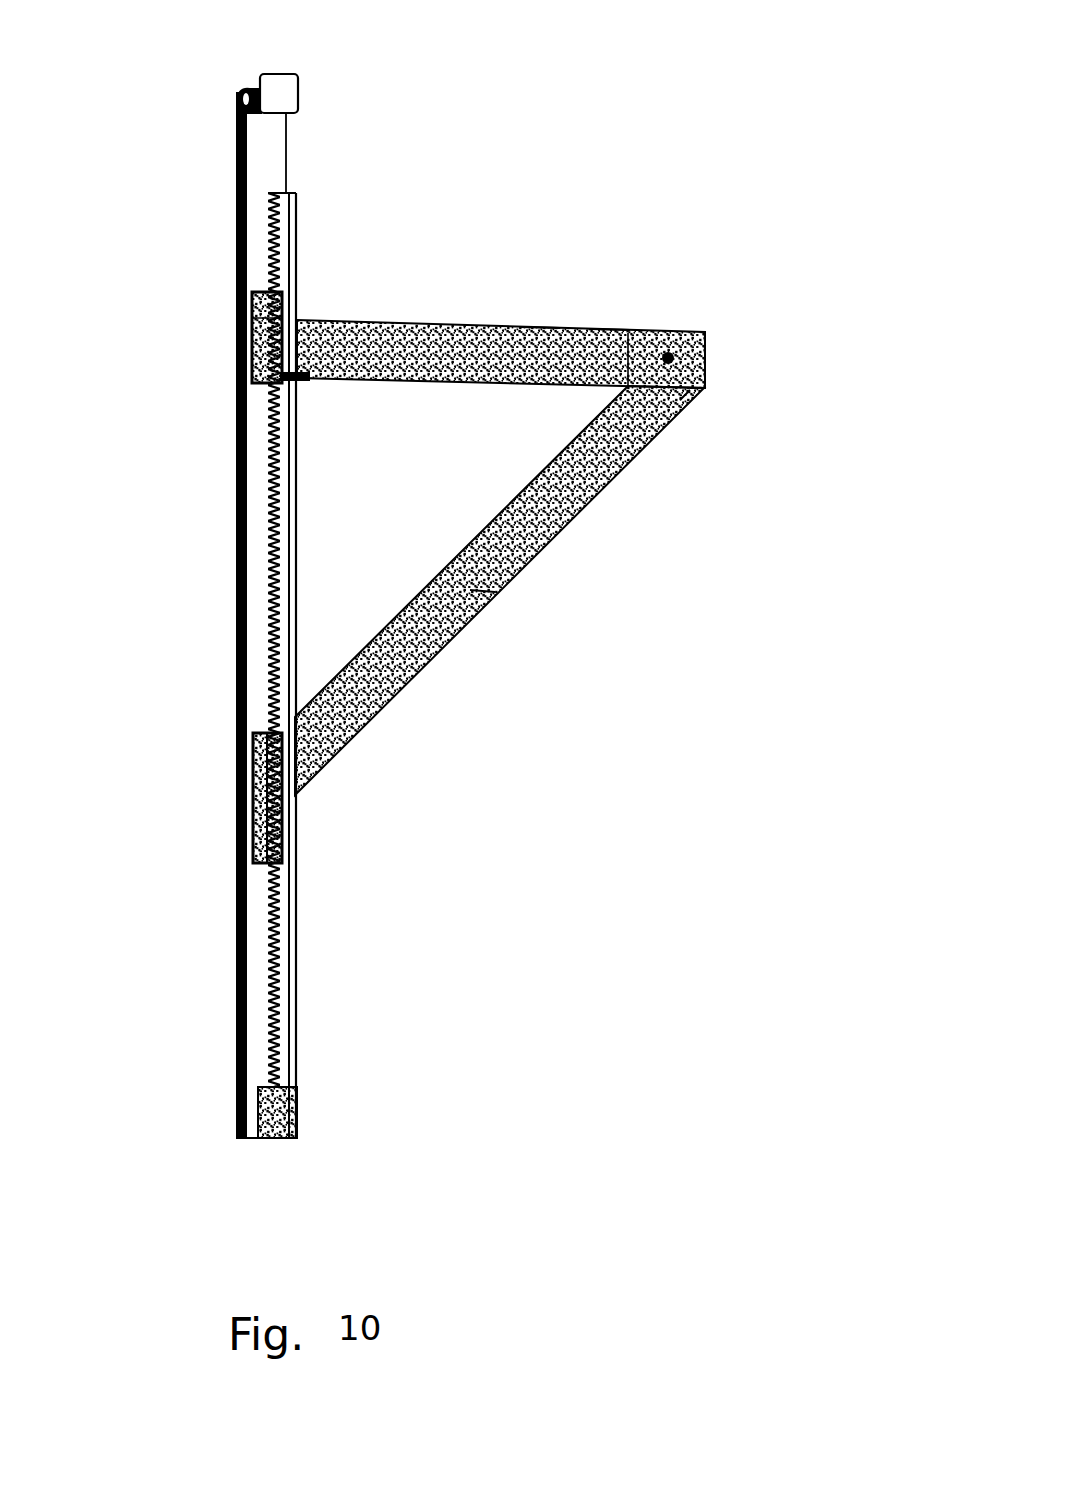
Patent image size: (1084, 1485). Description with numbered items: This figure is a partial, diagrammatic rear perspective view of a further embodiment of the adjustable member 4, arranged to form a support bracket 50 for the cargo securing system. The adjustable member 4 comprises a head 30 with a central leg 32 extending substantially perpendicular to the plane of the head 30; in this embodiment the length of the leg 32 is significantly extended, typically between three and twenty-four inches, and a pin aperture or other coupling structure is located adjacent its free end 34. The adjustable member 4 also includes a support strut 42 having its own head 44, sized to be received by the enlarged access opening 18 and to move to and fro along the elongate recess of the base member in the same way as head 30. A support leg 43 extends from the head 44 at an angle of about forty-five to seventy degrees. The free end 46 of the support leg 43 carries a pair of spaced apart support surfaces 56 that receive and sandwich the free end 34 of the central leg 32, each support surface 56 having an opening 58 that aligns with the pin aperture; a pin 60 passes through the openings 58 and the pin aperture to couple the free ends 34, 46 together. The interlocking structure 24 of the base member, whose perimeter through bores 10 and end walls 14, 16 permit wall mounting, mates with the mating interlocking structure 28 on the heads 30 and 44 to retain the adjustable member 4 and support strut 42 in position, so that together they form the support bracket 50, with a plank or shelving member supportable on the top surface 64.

The adjustable member 4 is at (315, 380).
The through bores 10 is at (240, 360).
The first end wall 14 is at (280, 72).
The second end wall 16 is at (270, 1138).
The access opening 18 is at (270, 152).
The interlocking structure 24 is at (270, 230).
The mating interlocking structure 28 is at (292, 293).
The head 30 is at (260, 318).
The central leg 32 is at (445, 322).
The free end 34 is at (610, 318).
The support strut 42 is at (420, 675).
The support leg 43 is at (480, 603).
The head 44 is at (298, 820).
The free end 46 is at (714, 360).
The support bracket 50 is at (585, 487).
The support surfaces 56 is at (705, 332).
The opening 58 is at (705, 382).
The pin 60 is at (685, 405).
The top surface 64 is at (548, 327).